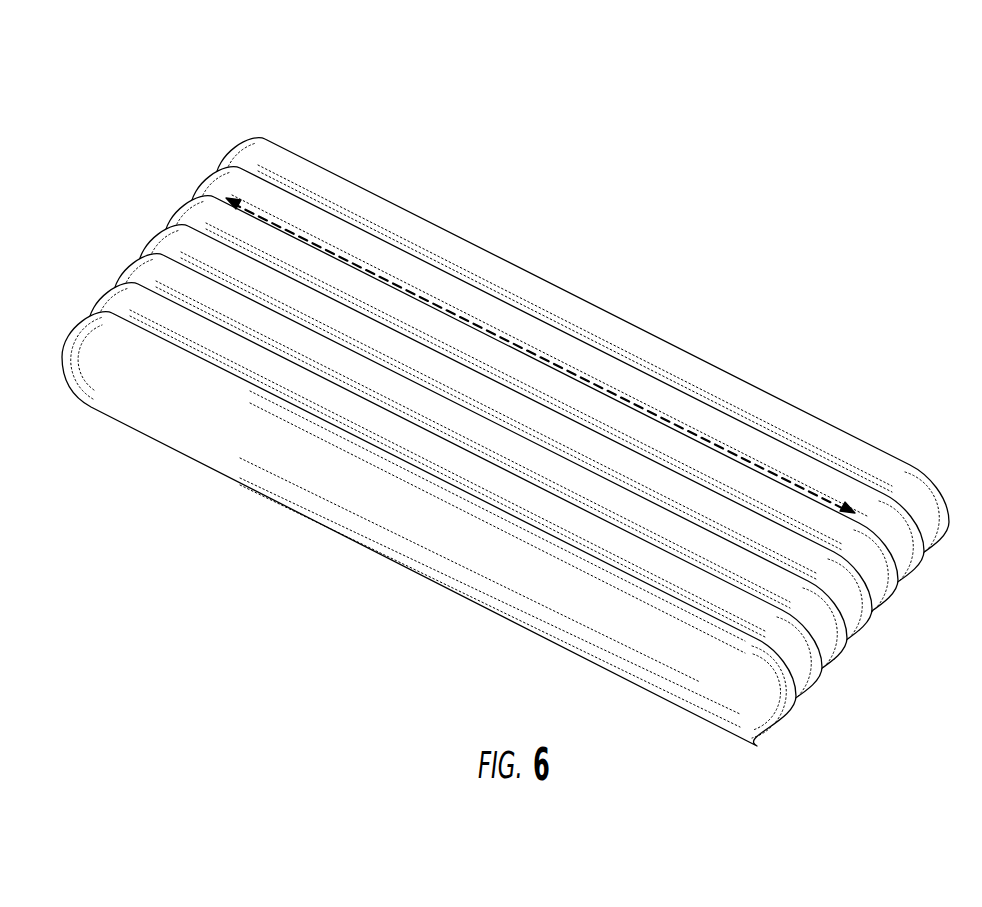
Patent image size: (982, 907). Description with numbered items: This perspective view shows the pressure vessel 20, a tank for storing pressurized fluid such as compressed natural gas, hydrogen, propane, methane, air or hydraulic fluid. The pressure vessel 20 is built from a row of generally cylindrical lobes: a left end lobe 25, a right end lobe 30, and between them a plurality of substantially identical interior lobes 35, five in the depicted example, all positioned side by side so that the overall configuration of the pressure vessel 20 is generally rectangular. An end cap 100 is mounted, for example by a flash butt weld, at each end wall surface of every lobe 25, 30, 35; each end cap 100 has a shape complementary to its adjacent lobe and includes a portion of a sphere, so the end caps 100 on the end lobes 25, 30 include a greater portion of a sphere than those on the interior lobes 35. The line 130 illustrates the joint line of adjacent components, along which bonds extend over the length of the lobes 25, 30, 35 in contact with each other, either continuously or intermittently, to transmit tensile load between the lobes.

The pressure vessel 20 is at (119, 101).
The left end lobe 25 is at (350, 502).
The right end lobe 30 is at (620, 335).
The interior lobes 35 is at (186, 283).
The end cap 100 is at (770, 717).
The line 130 is at (748, 460).